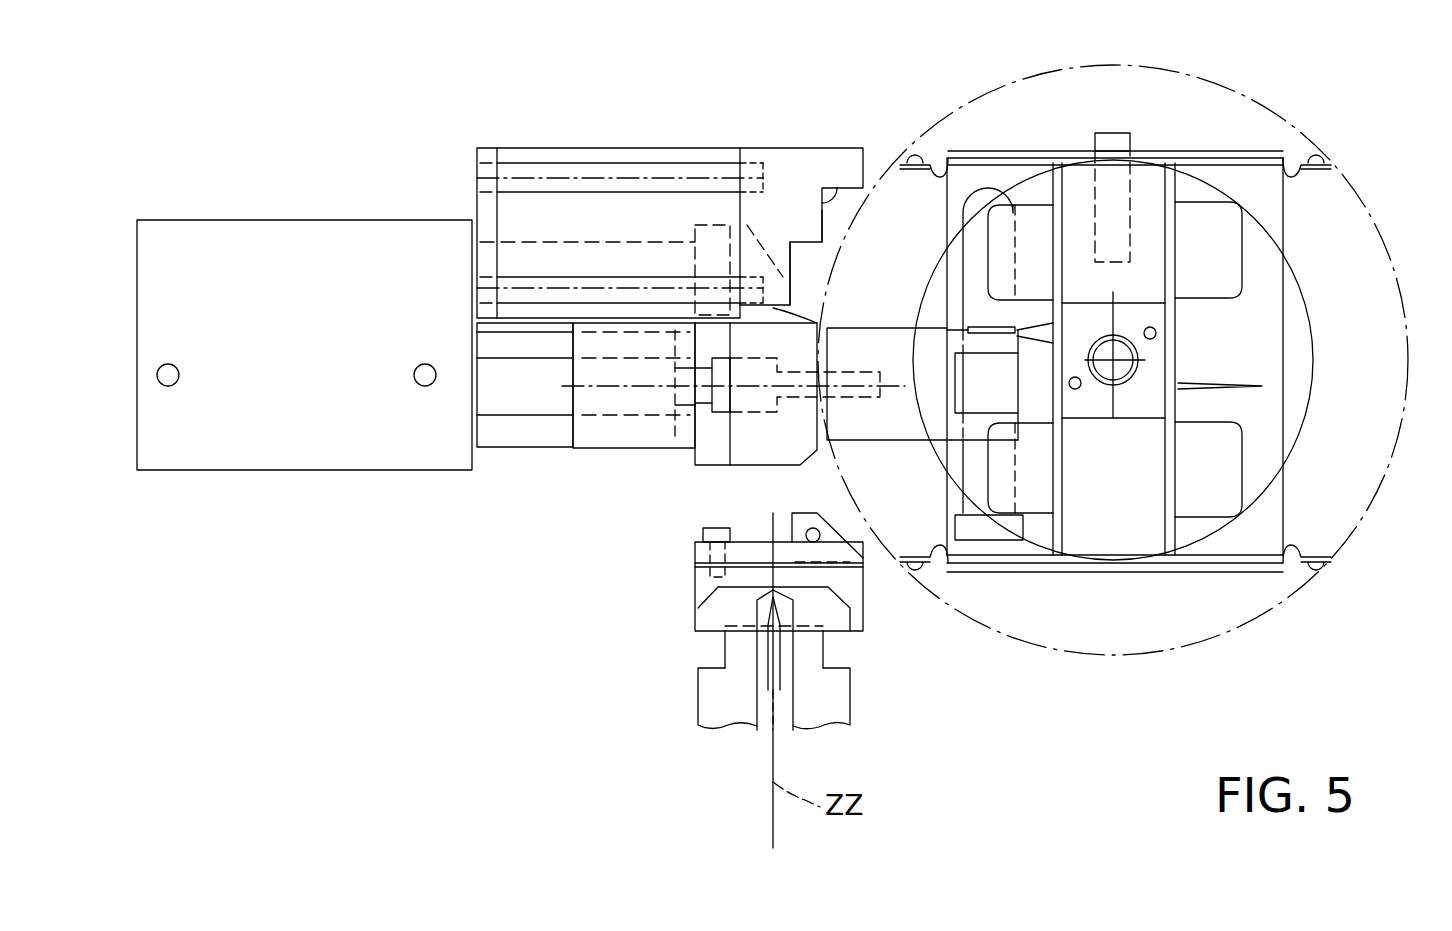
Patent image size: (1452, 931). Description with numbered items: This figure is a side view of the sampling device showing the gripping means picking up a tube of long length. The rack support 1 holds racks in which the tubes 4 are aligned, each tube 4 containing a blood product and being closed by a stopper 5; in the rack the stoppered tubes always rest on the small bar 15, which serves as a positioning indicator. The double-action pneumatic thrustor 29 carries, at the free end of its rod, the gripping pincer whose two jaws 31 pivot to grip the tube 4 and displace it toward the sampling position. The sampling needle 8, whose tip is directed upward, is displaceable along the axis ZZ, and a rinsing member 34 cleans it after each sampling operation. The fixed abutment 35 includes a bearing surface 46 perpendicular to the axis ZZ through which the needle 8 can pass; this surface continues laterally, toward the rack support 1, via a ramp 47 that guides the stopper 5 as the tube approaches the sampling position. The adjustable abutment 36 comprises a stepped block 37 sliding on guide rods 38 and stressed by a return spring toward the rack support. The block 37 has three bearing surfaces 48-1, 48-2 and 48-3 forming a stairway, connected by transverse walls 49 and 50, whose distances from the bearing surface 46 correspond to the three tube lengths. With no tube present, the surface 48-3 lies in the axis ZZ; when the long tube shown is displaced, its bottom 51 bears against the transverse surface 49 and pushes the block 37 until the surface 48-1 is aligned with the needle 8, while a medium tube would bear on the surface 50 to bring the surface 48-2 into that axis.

The rack support 1 is at (1113, 342).
The tube 4 is at (977, 465).
The stopper 5 is at (1005, 531).
The sampling needle 8 is at (780, 690).
The small bar 15 is at (975, 561).
The pneumatic thrustor 29 is at (314, 482).
The jaw 31 is at (858, 417).
The rinsing member 34 is at (697, 704).
The fixed abutment 35 is at (761, 606).
The adjustable abutment 36 is at (795, 142).
The stepped block 37 is at (783, 172).
The guide rod 38 is at (566, 287).
The bearing surface 46 is at (750, 542).
The ramp 47 is at (837, 543).
The bearing surface 48-1 is at (862, 198).
The bearing surface 48-2 is at (812, 247).
The bearing surface 48-3 is at (786, 306).
The transverse wall 49 is at (837, 188).
The transverse wall 50 is at (792, 258).
The tube bottom 51 is at (992, 200).